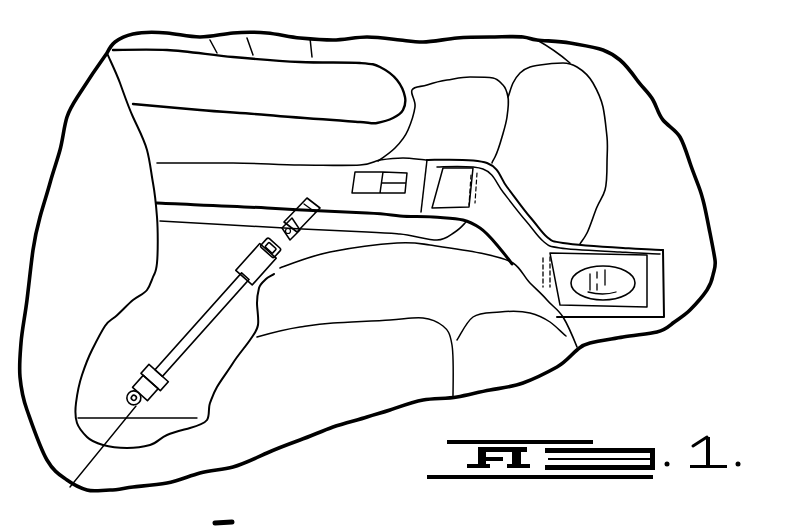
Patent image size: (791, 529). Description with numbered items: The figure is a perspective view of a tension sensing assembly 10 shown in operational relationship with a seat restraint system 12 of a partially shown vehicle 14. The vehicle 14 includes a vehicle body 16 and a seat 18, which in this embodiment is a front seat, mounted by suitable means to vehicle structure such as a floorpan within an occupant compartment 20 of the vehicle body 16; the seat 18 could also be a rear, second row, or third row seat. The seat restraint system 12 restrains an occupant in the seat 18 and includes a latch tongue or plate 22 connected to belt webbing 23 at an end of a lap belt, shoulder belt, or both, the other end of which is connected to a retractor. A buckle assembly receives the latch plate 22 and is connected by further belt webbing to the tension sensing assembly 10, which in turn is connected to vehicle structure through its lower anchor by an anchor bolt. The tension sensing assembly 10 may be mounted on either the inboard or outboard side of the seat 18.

The tension sensing assembly 10 is at (136, 365).
The seat restraint system 12 is at (195, 379).
The vehicle 14 is at (679, 133).
The vehicle body 16 is at (688, 213).
The seat 18 is at (318, 390).
The occupant compartment 20 is at (705, 257).
The latch tongue or plate 22 is at (282, 230).
The belt webbing 23 is at (311, 203).